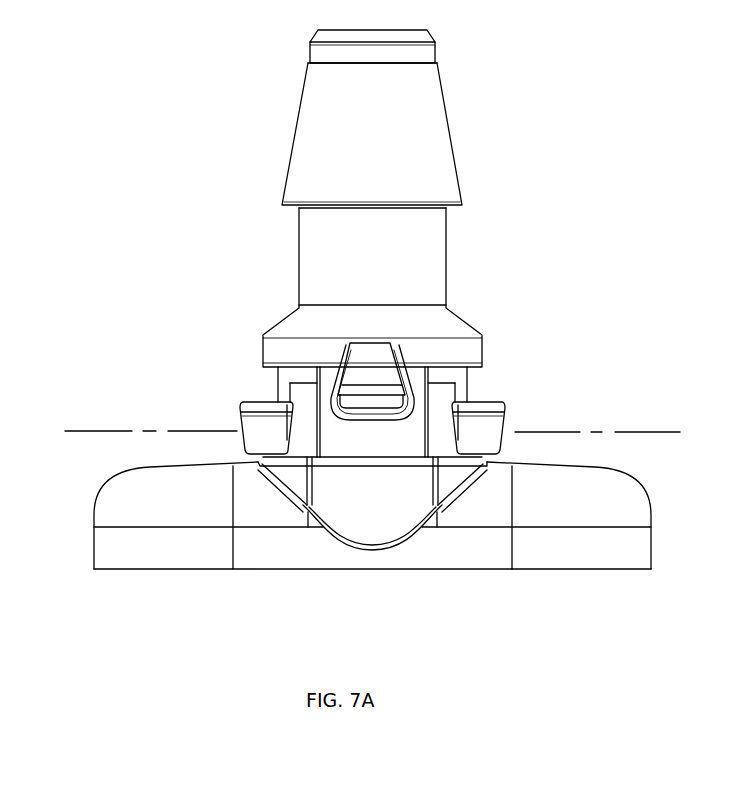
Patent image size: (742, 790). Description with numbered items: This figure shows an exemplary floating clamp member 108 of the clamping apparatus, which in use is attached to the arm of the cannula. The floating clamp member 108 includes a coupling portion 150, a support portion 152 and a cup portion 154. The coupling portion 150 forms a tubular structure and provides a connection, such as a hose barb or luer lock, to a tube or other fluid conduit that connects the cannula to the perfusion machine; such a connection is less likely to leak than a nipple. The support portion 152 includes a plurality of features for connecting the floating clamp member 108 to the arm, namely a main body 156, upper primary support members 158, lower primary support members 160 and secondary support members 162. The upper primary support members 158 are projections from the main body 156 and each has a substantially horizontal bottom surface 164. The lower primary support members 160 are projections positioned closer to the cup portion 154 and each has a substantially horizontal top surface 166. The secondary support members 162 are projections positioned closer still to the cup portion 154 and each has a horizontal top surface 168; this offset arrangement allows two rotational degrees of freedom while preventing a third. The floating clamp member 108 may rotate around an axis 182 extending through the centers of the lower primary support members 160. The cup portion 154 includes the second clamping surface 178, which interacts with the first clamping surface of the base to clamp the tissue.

The floating clamp member 108 is at (571, 172).
The coupling portion 150 is at (297, 117).
The support portion 152 is at (479, 381).
The cup portion 154 is at (580, 468).
The main body 156 is at (277, 386).
The upper primary support members 158 is at (378, 378).
The lower primary support members 160 is at (233, 407).
The secondary support members 162 is at (373, 505).
The bottom surface 164 is at (380, 412).
The top surfaces 166 is at (262, 401).
The top surfaces 168 is at (318, 405).
The second clamping surface 178 is at (545, 570).
The axis 182 is at (110, 431).